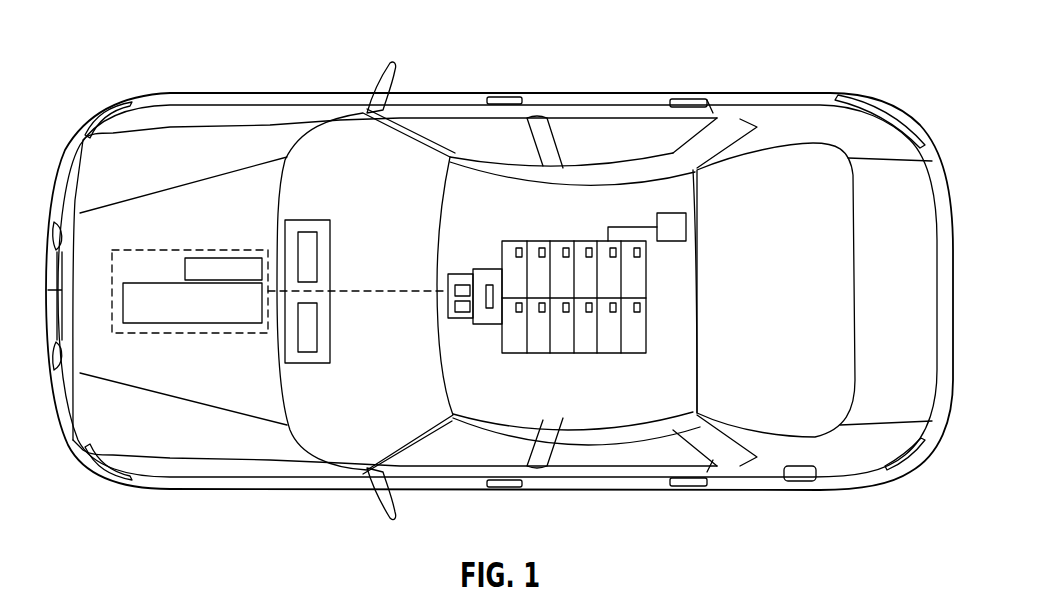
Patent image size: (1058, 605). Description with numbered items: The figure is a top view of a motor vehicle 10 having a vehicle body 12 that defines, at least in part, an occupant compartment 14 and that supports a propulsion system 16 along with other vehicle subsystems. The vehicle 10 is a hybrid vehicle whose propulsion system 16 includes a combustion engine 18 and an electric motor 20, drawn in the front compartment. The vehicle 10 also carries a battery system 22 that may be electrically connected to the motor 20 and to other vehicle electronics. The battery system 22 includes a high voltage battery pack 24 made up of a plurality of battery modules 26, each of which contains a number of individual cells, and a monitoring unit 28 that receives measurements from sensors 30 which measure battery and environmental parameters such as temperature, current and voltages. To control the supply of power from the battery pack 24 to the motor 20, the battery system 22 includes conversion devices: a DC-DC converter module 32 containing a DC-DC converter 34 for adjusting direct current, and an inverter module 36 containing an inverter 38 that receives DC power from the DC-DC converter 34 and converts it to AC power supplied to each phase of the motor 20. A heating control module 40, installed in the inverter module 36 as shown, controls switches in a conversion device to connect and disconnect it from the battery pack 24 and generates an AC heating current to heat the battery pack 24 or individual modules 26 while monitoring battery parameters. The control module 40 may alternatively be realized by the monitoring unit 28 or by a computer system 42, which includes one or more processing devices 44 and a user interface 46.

The motor vehicle 10 is at (117, 43).
The vehicle body 12 is at (550, 92).
The occupant compartment 14 is at (592, 410).
The propulsion system 16 is at (153, 250).
The combustion engine 18 is at (213, 327).
The electric motor 20 is at (240, 257).
The battery system 22 is at (523, 367).
The high voltage battery pack 24 is at (647, 271).
The battery modules 26 is at (540, 250).
The monitoring unit 28 is at (687, 224).
The sensors 30 is at (592, 249).
The DC-DC converter module 32 is at (496, 269).
The DC-DC converter 34 is at (489, 285).
The inverter module 36 is at (448, 289).
The inverter 38 is at (455, 290).
The heating control module 40 is at (455, 306).
The computer system 42 is at (330, 173).
The processing devices 44 is at (318, 248).
The user interface 46 is at (318, 335).